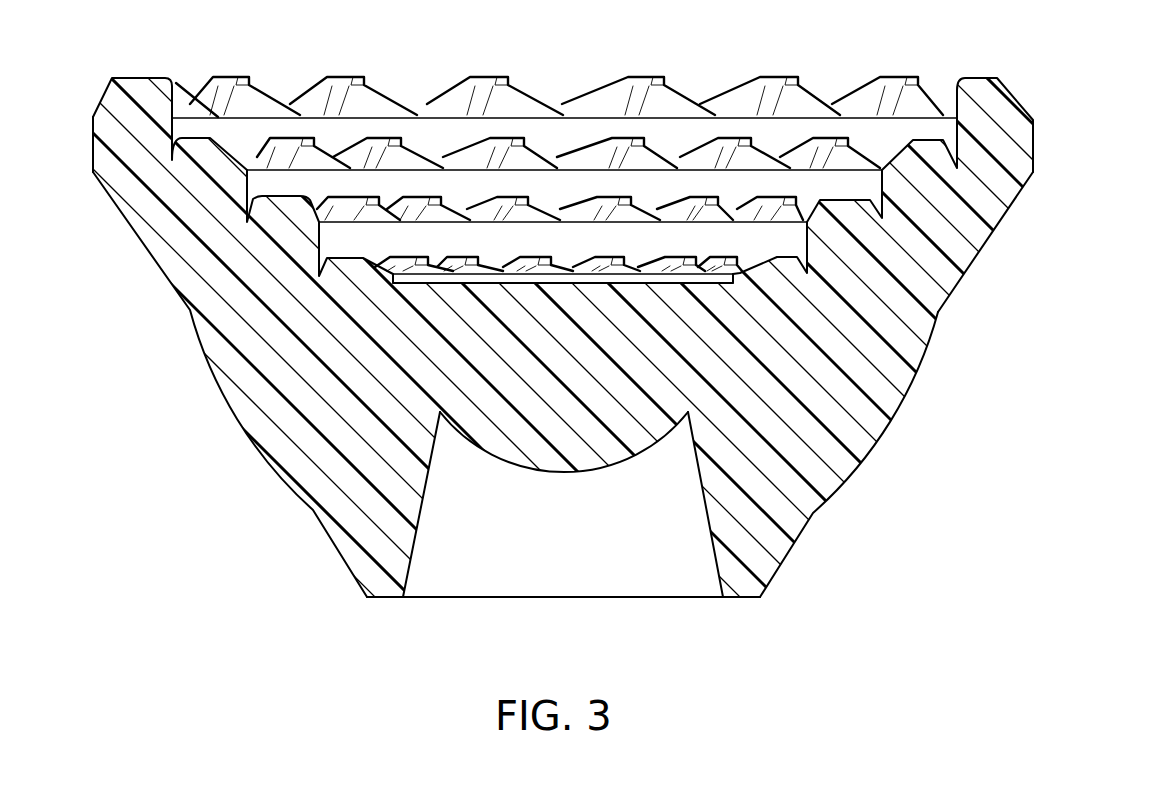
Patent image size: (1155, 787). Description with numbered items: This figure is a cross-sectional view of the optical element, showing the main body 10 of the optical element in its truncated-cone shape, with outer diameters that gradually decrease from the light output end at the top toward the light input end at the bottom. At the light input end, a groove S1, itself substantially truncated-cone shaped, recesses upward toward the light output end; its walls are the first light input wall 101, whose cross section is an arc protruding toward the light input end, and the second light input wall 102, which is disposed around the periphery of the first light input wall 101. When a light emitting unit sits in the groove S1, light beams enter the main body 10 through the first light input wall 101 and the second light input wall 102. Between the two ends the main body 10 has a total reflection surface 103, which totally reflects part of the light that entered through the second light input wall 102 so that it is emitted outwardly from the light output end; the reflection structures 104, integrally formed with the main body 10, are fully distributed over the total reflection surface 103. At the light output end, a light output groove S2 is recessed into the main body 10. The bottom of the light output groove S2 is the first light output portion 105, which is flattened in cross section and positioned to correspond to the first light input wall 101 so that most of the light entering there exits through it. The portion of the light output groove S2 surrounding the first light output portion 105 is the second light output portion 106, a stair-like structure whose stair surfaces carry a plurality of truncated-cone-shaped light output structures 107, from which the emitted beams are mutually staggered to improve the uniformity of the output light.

The main body 10 is at (1010, 122).
The first light input wall 101 is at (563, 478).
The second light input wall 102 is at (417, 518).
The total reflection surface 103 is at (995, 242).
The reflection structures 104 is at (885, 425).
The first light output portion 105 is at (413, 287).
The second light output portion 106 is at (423, 168).
The light output structures 107 is at (266, 104).
The groove S1 is at (631, 581).
The light output groove S2 is at (560, 132).